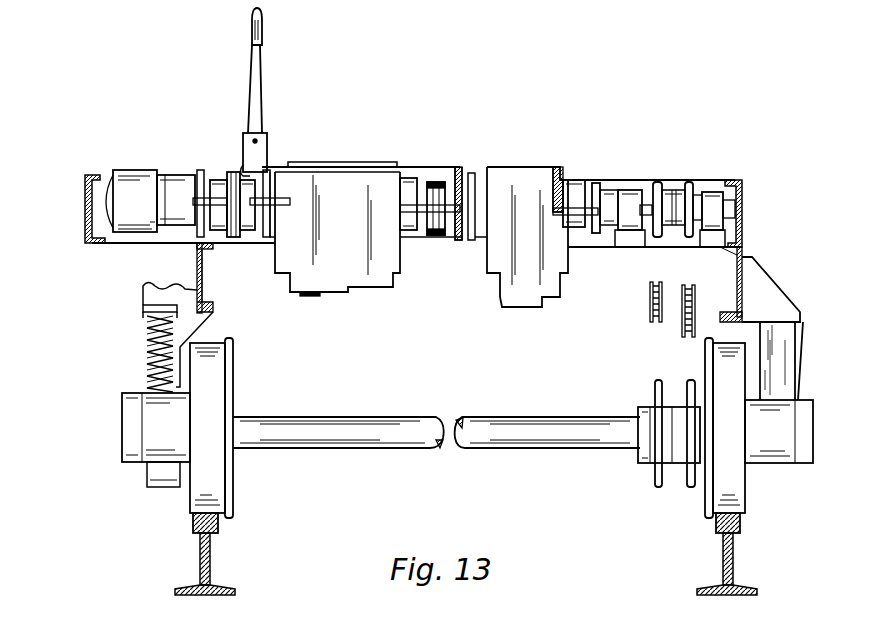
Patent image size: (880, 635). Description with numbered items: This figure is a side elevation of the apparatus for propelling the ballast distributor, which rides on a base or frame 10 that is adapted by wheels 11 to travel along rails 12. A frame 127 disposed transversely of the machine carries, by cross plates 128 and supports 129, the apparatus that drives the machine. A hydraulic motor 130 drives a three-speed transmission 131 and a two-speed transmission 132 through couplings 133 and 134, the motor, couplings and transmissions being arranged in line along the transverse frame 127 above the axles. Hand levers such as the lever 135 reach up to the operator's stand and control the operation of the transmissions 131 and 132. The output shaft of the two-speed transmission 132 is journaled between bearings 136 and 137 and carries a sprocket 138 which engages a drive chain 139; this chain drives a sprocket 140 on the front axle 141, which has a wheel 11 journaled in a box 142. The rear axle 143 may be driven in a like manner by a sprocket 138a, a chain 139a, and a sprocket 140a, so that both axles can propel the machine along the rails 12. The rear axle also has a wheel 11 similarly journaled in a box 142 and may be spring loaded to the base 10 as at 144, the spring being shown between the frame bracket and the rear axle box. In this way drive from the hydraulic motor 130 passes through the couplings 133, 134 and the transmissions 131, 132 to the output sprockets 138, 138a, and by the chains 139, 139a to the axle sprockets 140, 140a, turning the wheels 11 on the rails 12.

The base or frame 10 is at (197, 262).
The wheel 11 is at (230, 488).
The rail 12 is at (210, 556).
The frame 127 is at (82, 172).
The cross plate 128 is at (201, 170).
The support 129 is at (405, 238).
The hydraulic motor 130 is at (150, 161).
The three-speed transmission 131 is at (357, 288).
The two-speed transmission 132 is at (500, 278).
The coupling 133 is at (233, 237).
The coupling 134 is at (435, 182).
The lever 135 is at (257, 82).
The bearing 136 is at (628, 190).
The bearing 137 is at (712, 192).
The sprocket 138 is at (698, 165).
The sprocket 138a is at (657, 182).
The drive chain 139 is at (682, 330).
The chain 139a is at (650, 294).
The sprocket 140 is at (688, 478).
The sprocket 140a is at (655, 400).
The front axle 141 is at (510, 420).
The box 142 is at (125, 410).
The rear axle 143 is at (305, 420).
The spring loading 144 is at (147, 338).